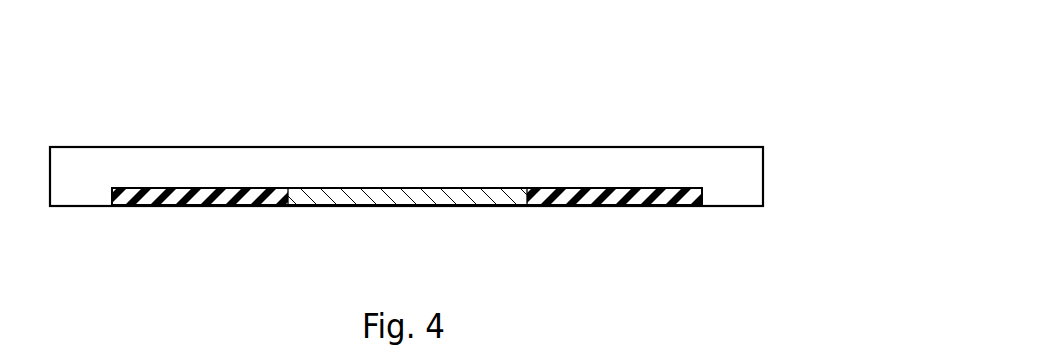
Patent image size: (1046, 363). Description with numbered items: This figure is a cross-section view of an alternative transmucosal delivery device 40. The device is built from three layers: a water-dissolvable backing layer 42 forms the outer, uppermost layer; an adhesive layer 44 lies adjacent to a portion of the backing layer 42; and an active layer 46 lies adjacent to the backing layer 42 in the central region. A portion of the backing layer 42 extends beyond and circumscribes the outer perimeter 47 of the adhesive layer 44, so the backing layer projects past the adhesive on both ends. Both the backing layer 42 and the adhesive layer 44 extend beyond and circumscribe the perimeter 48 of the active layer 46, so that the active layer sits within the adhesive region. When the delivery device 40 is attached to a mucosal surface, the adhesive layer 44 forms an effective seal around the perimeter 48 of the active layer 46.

The delivery device 40 is at (543, 117).
The backing layer 42 is at (751, 154).
The adhesive layer 44 is at (654, 198).
The active layer 46 is at (495, 198).
The outer perimeter 47 is at (112, 192).
The perimeter 48 is at (287, 195).